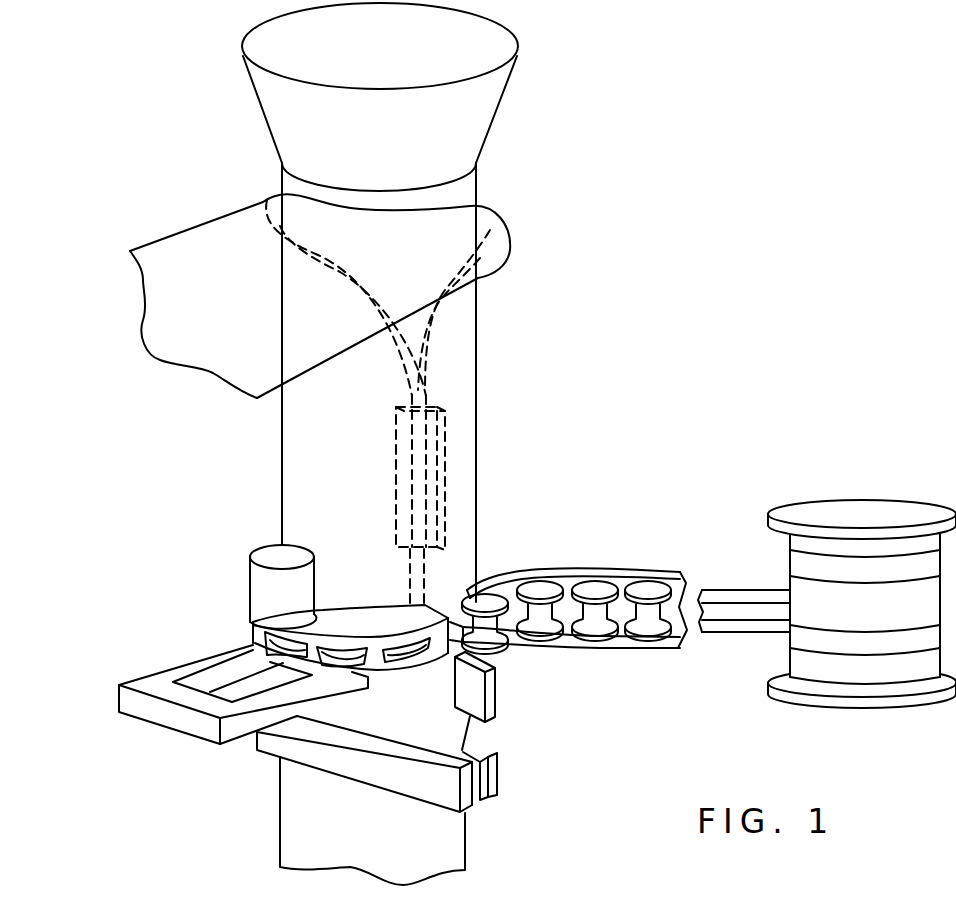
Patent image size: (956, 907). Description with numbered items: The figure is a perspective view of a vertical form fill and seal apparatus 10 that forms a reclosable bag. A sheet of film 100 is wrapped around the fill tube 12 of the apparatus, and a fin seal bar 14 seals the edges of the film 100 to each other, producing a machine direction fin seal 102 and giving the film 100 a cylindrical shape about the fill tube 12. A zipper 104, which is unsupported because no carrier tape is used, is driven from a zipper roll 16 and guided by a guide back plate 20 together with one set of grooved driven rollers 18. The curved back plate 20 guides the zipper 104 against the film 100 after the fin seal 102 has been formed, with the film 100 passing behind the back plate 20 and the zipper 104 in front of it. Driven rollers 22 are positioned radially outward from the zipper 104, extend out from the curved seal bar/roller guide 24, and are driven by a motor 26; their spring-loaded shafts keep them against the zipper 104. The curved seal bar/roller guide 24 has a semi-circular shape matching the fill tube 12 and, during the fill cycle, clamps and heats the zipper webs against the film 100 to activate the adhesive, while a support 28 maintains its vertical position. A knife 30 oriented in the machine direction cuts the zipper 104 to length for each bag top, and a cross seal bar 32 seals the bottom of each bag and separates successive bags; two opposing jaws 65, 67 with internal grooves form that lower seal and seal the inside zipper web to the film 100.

The vertical form fill and seal apparatus 10 is at (627, 139).
The fill tube 12 is at (470, 117).
The fin seal bar 14 is at (440, 477).
The zipper roll 16 is at (850, 510).
The grooved driven rollers 18 is at (648, 637).
The guide back plate 20 is at (620, 567).
The driven rollers 22 is at (267, 643).
The curved seal bar/roller guide 24 is at (353, 623).
The motor 26 is at (267, 590).
The support 28 is at (190, 720).
The knife 30 is at (475, 682).
The cross seal bar 32 is at (490, 800).
The opposing jaw 65 is at (438, 797).
The opposing jaw 67 is at (495, 782).
The film 100 is at (490, 268).
The machine direction fin seal 102 is at (420, 577).
The zipper 104 is at (738, 635).